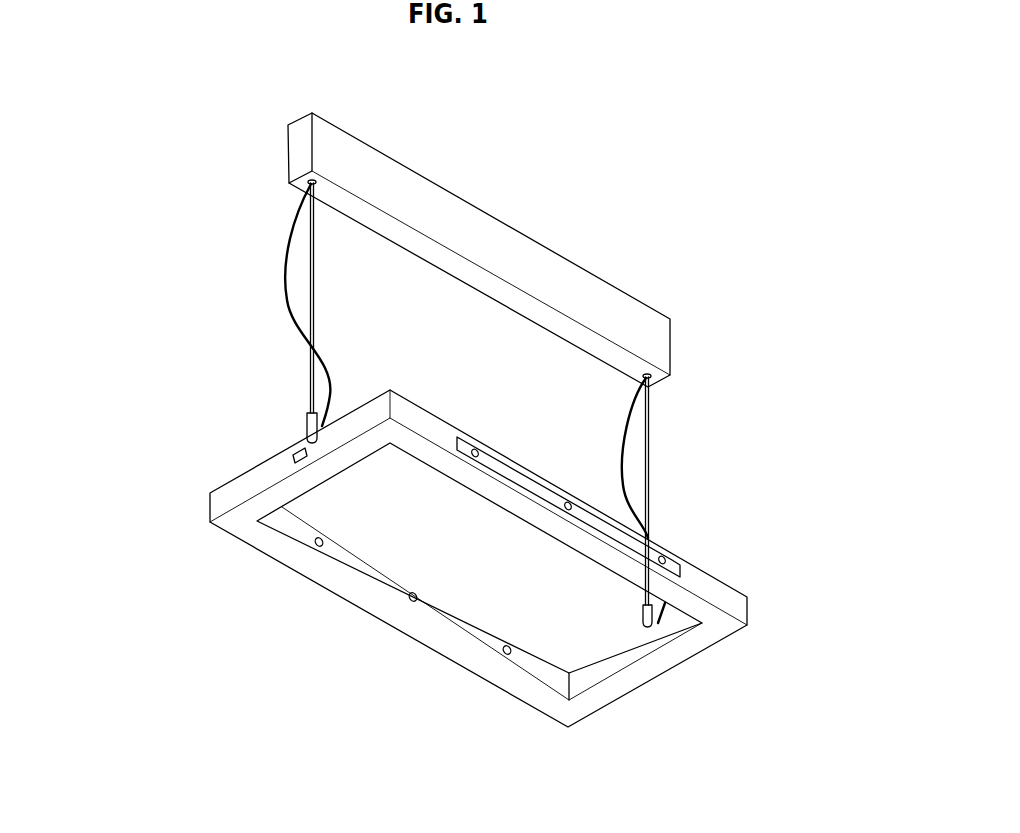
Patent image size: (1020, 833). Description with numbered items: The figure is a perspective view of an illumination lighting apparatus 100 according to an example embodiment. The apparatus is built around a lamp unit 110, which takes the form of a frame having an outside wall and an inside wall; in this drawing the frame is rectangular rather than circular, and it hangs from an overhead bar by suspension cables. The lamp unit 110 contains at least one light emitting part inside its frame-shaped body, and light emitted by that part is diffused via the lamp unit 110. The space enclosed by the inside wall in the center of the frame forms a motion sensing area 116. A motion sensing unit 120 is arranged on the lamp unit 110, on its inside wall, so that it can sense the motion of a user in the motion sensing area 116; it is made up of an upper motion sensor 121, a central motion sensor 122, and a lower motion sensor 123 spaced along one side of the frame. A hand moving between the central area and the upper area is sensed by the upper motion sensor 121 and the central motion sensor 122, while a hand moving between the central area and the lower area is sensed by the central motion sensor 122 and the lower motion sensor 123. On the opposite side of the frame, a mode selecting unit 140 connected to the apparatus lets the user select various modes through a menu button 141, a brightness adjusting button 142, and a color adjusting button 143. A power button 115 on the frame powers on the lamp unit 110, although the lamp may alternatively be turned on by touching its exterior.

The illumination lighting apparatus 100 is at (507, 113).
The lamp unit 110 is at (236, 532).
The power button 115 is at (292, 452).
The motion sensing area 116 is at (571, 604).
The motion sensing unit 120 is at (258, 633).
The upper motion sensor 121 is at (319, 546).
The central motion sensor 122 is at (413, 601).
The lower motion sensor 123 is at (507, 654).
The mode selecting unit 140 is at (682, 568).
The menu button 141 is at (475, 450).
The brightness adjusting button 142 is at (568, 503).
The color adjusting button 143 is at (665, 557).